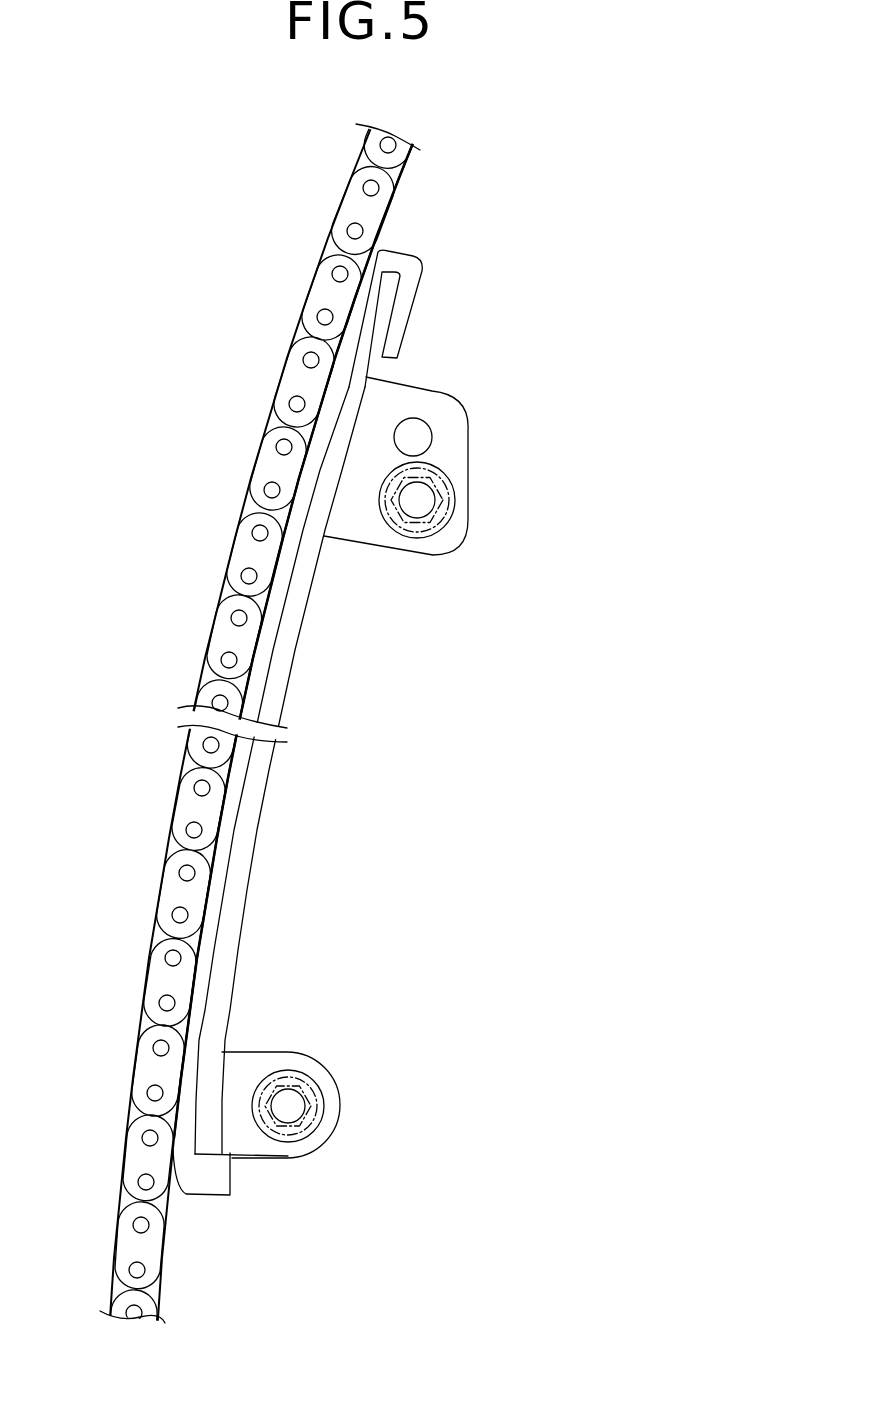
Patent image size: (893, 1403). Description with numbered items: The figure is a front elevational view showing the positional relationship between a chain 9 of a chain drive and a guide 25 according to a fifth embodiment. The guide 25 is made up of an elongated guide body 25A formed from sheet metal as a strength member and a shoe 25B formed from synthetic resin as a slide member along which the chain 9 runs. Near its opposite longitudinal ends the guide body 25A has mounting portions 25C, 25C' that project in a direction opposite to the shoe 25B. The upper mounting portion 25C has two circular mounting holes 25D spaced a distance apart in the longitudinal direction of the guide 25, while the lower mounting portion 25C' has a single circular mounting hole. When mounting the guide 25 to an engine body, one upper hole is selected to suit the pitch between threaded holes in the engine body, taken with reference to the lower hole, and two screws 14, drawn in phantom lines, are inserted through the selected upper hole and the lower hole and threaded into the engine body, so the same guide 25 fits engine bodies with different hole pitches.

The chain 9 is at (174, 806).
The guide 25 is at (295, 652).
The guide body 25A is at (263, 814).
The shoe 25B is at (228, 880).
The upper mounting portion 25C is at (447, 436).
The lower mounting portion 25C' is at (305, 1157).
The mounting hole 25D is at (500, 492).
The screw 14 is at (432, 482).